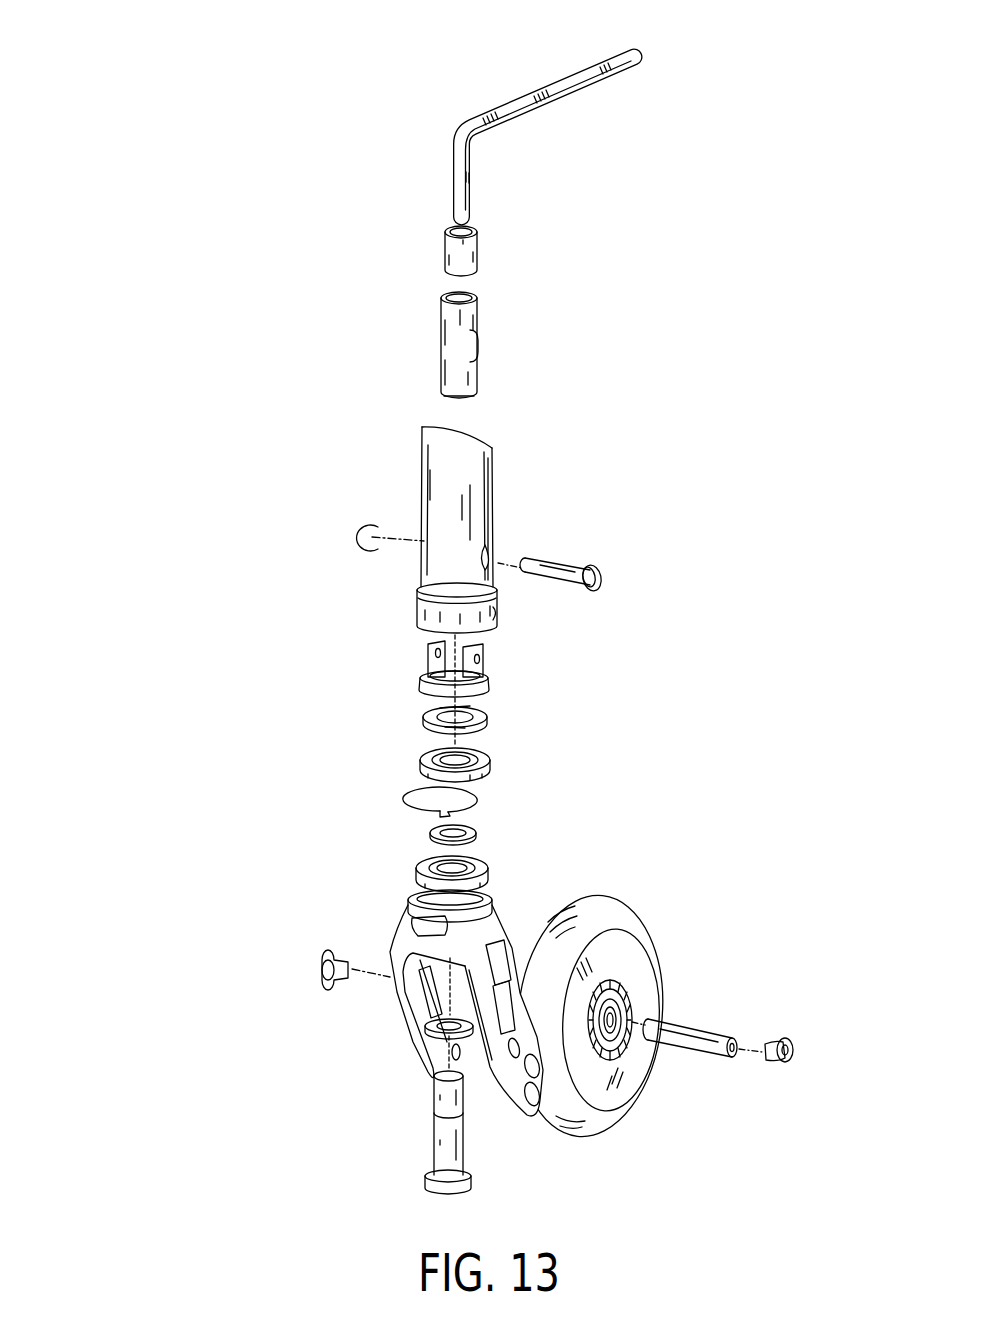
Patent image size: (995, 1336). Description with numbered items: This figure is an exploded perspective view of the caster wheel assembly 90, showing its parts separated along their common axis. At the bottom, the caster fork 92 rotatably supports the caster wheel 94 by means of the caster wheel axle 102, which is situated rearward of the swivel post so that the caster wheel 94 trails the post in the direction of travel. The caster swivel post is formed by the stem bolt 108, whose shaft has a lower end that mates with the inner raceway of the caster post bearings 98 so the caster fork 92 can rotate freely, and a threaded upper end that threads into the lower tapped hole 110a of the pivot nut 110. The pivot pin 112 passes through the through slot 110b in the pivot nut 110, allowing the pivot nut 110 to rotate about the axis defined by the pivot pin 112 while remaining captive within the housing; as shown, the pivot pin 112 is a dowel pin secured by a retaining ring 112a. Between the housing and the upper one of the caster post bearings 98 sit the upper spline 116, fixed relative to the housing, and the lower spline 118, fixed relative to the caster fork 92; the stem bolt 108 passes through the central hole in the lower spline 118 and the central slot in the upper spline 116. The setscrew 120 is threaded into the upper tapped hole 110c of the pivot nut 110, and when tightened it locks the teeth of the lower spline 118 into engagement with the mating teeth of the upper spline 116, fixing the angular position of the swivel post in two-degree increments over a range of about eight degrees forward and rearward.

The caster wheel assembly 90 is at (190, 132).
The caster fork 92 is at (398, 1003).
The caster wheel 94 is at (622, 898).
The caster post bearings 98 is at (417, 870).
The caster wheel axle 102 is at (700, 1028).
The stem bolt 108 is at (430, 1132).
The pivot nut 110 is at (440, 380).
The lower tapped hole 110a is at (467, 398).
The through slot 110b is at (484, 345).
The upper tapped hole 110c is at (450, 290).
The pivot pin 112 is at (602, 566).
The retaining ring 112a is at (366, 551).
The upper spline 116 is at (420, 678).
The lower spline 118 is at (488, 722).
The setscrew 120 is at (478, 247).